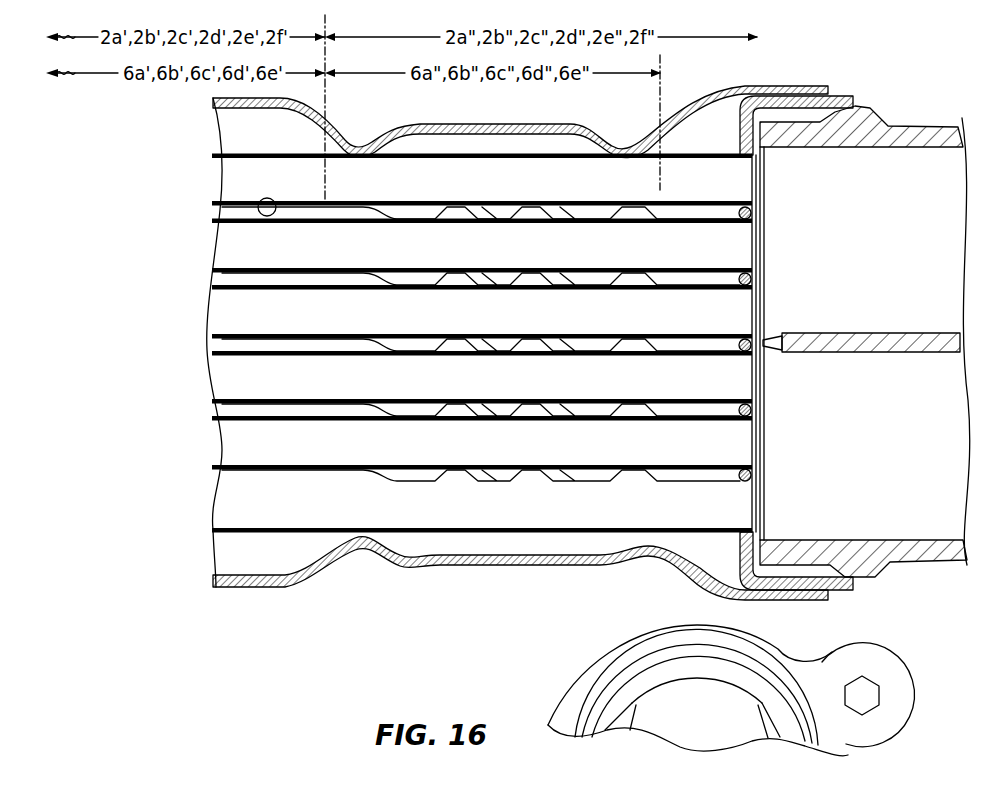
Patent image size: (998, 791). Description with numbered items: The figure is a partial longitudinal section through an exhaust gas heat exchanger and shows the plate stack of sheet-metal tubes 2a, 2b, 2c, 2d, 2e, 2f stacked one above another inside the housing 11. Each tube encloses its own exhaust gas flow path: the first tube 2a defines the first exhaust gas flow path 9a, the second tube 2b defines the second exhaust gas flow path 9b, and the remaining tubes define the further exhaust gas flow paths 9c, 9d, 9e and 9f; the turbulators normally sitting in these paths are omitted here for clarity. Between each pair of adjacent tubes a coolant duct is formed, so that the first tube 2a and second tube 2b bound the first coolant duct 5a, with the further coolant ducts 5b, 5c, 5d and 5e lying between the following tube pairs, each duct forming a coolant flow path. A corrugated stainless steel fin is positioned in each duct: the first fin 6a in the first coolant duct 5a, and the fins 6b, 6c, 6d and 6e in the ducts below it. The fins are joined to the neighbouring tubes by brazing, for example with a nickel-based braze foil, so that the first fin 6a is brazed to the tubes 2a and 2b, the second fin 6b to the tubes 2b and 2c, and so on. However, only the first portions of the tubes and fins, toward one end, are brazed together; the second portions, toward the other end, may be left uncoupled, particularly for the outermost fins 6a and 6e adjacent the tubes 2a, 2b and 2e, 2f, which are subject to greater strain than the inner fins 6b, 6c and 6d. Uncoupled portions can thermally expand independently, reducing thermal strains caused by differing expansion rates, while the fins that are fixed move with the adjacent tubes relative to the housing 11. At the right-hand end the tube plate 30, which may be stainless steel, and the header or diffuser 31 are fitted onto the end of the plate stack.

The first tube 2a is at (236, 173).
The second tube 2b is at (245, 237).
The third tube 2c is at (237, 303).
The fourth tube 2d is at (237, 370).
The fifth tube 2e is at (243, 435).
The sixth tube 2f is at (298, 508).
The first coolant duct 5a is at (266, 198).
The second coolant duct 5b is at (712, 284).
The third coolant duct 5c is at (712, 349).
The fourth coolant duct 5d is at (712, 414).
The fifth coolant duct 5e is at (712, 479).
The first fin 6a is at (230, 211).
The second fin 6b is at (232, 277).
The third fin 6c is at (228, 342).
The fourth fin 6d is at (228, 407).
The fifth fin 6e is at (368, 471).
The first exhaust gas flow path 9a is at (387, 160).
The second exhaust gas flow path 9b is at (320, 225).
The third exhaust gas flow path 9c is at (320, 291).
The fourth exhaust gas flow path 9d is at (320, 357).
The fifth exhaust gas flow path 9e is at (320, 423).
The sixth exhaust gas flow path 9f is at (453, 485).
The housing 11 is at (557, 566).
The tube plate 30 is at (858, 586).
The header or diffuser 31 is at (937, 561).